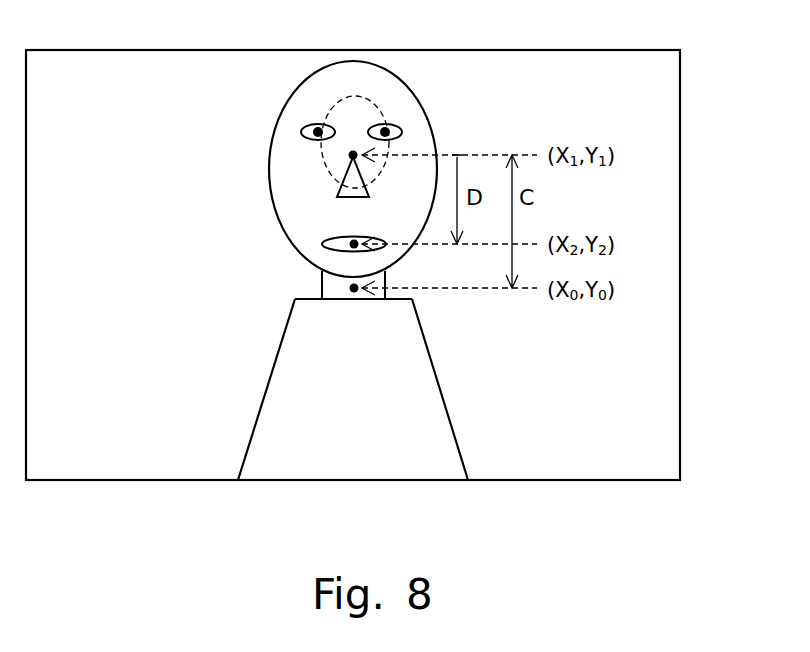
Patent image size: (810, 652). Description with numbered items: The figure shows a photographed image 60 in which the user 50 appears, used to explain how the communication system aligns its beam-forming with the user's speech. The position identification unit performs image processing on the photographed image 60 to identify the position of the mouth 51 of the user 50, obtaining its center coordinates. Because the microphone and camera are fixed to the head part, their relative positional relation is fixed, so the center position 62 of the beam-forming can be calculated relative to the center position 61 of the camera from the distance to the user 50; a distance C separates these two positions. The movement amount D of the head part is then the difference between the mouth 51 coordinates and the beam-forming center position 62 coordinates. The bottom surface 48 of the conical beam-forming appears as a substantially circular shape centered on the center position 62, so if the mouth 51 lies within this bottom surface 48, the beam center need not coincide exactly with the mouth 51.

The photographed image 60 is at (680, 108).
The user 50 is at (500, 100).
The bottom surface of the beam-forming 48 is at (338, 97).
The center position of the beam-forming 62 is at (348, 154).
The mouth 51 is at (325, 239).
The center position of the camera 61 is at (343, 285).